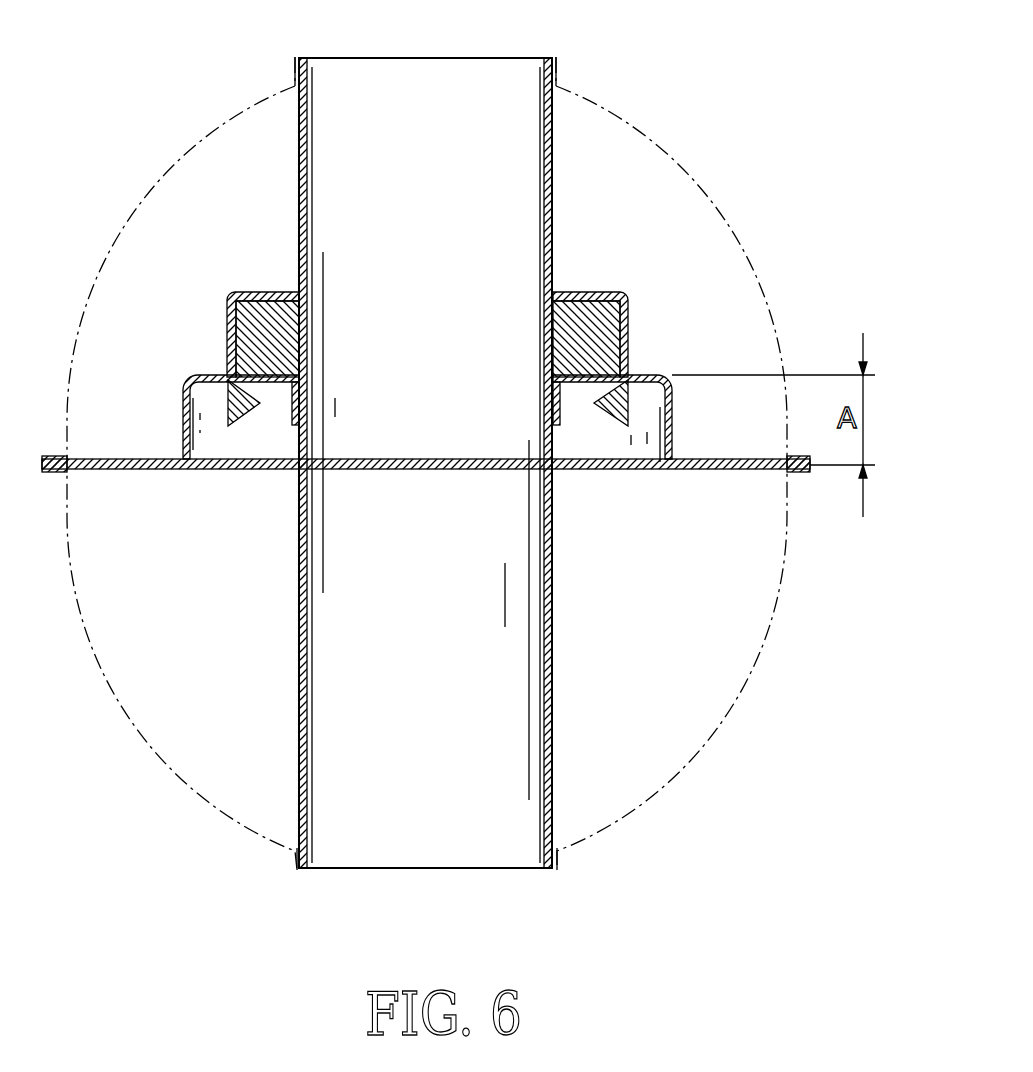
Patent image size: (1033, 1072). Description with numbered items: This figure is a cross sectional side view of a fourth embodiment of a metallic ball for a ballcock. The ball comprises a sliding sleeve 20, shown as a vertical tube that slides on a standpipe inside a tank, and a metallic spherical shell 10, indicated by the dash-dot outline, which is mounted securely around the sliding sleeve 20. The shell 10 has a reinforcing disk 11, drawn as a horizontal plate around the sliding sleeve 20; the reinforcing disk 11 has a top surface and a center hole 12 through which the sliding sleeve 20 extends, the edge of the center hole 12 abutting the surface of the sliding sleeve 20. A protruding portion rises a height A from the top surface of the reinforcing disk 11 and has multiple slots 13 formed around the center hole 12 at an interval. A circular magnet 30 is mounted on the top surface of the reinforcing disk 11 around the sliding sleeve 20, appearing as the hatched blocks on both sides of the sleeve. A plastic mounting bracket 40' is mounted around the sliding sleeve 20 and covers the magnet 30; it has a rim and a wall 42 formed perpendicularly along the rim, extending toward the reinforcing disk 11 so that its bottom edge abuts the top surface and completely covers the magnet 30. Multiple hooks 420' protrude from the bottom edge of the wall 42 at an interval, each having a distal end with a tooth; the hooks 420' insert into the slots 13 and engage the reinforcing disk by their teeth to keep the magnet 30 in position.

The shell 10 is at (692, 178).
The sliding sleeve 20 is at (550, 137).
The reinforcing disk 11 is at (724, 466).
The center hole 12 is at (553, 400).
The slots 13 is at (628, 377).
The magnet 30 is at (262, 325).
The wall 42 is at (228, 343).
The mounting bracket 40' is at (596, 316).
The hooks 420' is at (354, 415).